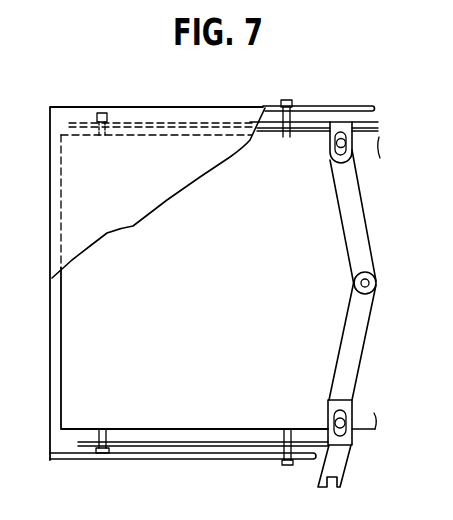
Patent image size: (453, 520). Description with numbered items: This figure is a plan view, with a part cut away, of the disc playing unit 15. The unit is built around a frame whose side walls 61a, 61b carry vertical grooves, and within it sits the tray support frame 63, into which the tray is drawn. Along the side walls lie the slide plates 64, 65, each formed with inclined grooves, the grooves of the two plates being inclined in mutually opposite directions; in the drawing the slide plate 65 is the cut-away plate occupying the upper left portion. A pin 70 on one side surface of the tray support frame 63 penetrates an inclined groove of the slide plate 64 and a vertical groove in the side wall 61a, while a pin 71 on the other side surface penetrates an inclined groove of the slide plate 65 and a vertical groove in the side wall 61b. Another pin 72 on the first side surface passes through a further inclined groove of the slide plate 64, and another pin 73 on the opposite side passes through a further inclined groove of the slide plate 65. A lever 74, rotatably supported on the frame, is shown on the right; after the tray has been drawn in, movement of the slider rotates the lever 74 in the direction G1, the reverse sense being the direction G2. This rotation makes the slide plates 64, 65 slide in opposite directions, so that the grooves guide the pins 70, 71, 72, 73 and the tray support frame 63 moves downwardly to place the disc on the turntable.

The disc playing unit 15 is at (323, 63).
The side wall 61a is at (222, 459).
The side wall 61b is at (321, 106).
The tray support frame 63 is at (67, 366).
The slide plate 64 is at (193, 442).
The slide plate 65 is at (264, 131).
The pin 70 is at (288, 468).
The pin 71 is at (285, 100).
The pin 72 is at (97, 452).
The pin 73 is at (101, 113).
The lever 74 is at (366, 234).
The direction G1 is at (393, 323).
The direction G2 is at (390, 342).